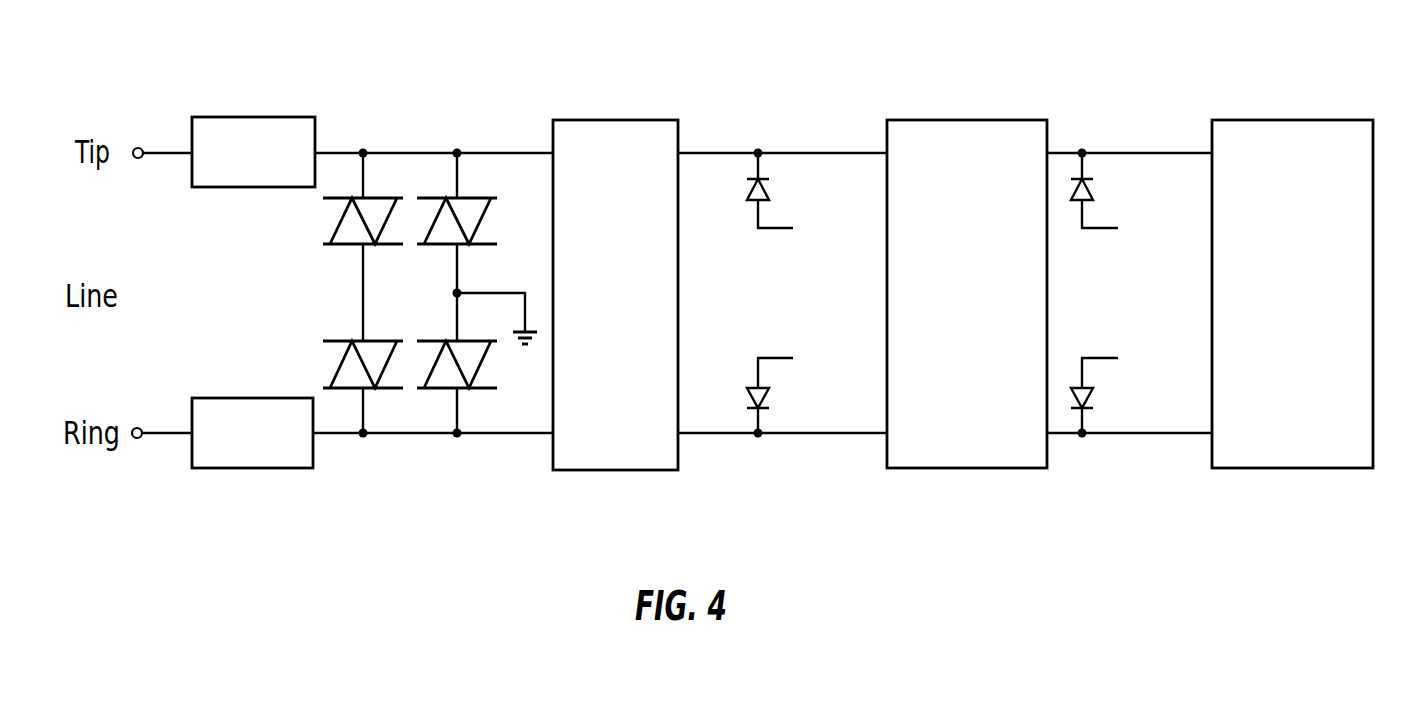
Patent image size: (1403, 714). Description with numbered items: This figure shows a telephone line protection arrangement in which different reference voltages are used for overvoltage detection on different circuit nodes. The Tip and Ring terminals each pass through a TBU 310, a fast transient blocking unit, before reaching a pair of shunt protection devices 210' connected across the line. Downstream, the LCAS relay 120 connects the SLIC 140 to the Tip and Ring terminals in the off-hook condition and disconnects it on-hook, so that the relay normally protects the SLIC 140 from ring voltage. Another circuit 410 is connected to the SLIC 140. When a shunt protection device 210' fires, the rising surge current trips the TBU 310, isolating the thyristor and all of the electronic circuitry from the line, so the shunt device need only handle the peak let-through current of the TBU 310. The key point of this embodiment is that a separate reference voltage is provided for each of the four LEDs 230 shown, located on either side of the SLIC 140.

The TBU 310 is at (245, 96).
The shunt protection device 210' is at (691, 291).
The LCAS relay 120 is at (639, 363).
The LEDs 230 is at (779, 193).
The SLIC 140 is at (989, 328).
The other circuit 410 is at (1315, 343).